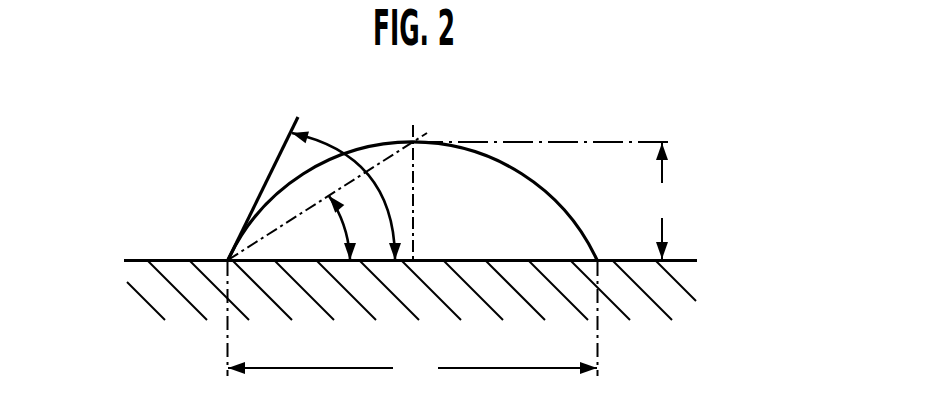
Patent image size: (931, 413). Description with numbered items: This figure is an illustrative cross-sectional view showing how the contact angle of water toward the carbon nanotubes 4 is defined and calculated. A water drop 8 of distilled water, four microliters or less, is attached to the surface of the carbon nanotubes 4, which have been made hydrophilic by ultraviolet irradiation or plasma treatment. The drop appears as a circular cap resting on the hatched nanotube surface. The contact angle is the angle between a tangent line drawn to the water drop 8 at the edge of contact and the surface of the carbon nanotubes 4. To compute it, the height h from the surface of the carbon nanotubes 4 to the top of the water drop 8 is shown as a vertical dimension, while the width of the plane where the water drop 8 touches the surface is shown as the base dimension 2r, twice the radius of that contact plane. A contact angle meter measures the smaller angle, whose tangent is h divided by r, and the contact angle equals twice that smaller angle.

The carbon nanotubes 4 is at (162, 260).
The water drop 8 is at (363, 148).
The height h is at (662, 201).
The diameter of the contact plane 2r is at (413, 324).